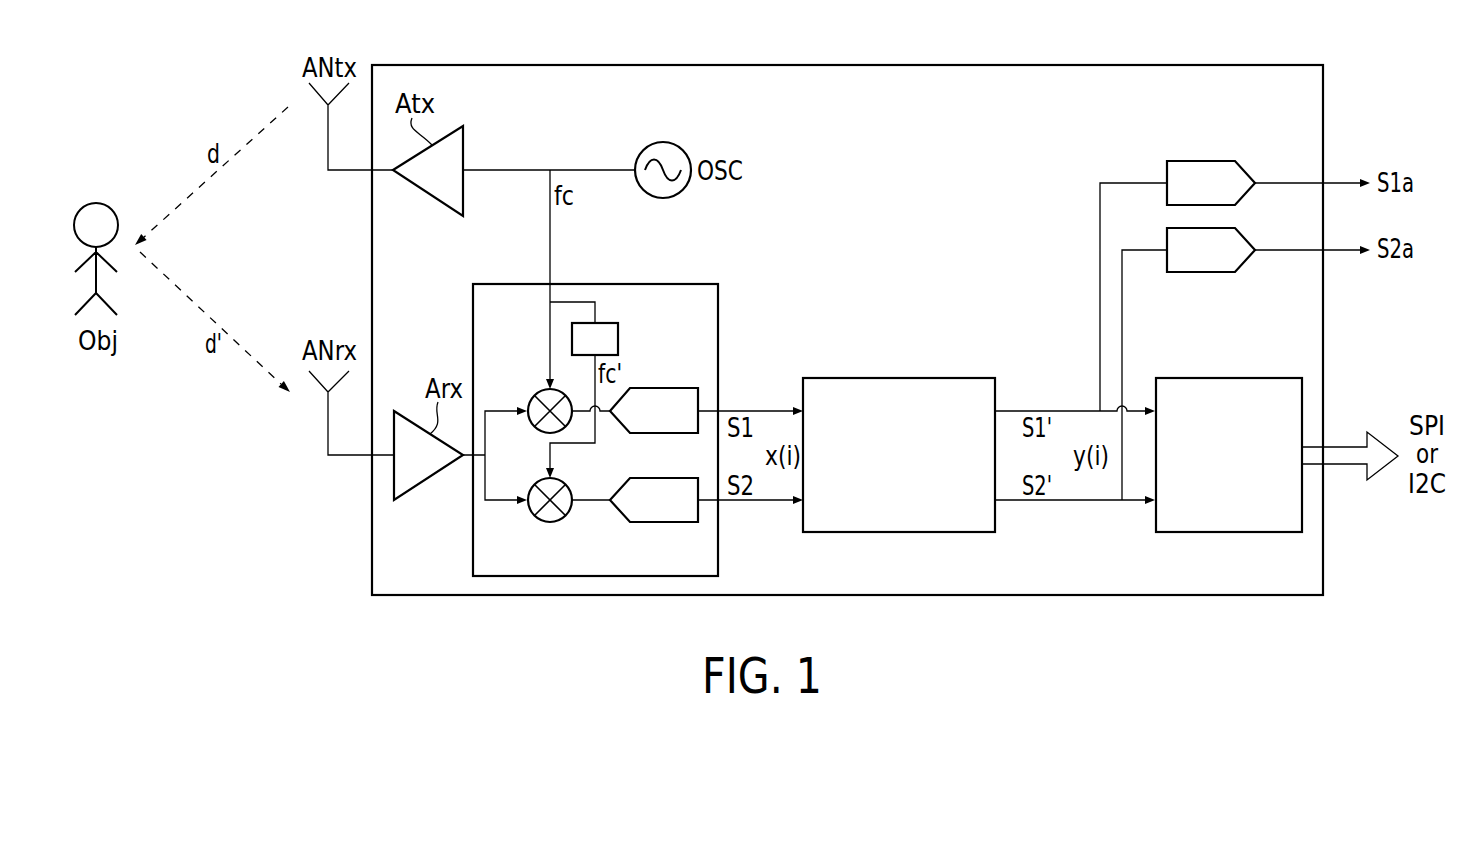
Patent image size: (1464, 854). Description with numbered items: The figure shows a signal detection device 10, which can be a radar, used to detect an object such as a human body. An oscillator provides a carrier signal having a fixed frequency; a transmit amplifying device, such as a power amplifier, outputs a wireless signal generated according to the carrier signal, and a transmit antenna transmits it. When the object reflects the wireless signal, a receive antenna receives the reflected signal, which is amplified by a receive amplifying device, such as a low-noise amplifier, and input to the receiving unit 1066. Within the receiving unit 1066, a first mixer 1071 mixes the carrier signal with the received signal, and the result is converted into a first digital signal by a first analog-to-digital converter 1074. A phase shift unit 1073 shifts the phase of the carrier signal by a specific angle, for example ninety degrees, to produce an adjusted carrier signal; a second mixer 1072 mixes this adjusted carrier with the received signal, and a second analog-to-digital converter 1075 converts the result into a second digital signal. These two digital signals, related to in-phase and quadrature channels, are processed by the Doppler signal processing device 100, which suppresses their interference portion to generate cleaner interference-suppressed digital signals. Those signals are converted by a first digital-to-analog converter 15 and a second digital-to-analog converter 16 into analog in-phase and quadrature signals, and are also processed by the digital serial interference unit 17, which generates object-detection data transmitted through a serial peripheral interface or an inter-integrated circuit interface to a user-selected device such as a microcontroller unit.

The signal detection device 10 is at (1038, 65).
The digital-to-analog converter 15 is at (1197, 161).
The digital-to-analog converter 16 is at (1198, 272).
The digital serial interference unit 17 is at (1271, 378).
The Doppler signal processing device 100 is at (897, 378).
The receiving unit 1066 is at (633, 284).
The mixer 1071 is at (537, 393).
The mixer 1072 is at (537, 519).
The phase shift unit 1073 is at (618, 336).
The analog-to-digital converter 1074 is at (665, 388).
The analog-to-digital converter 1075 is at (665, 522).